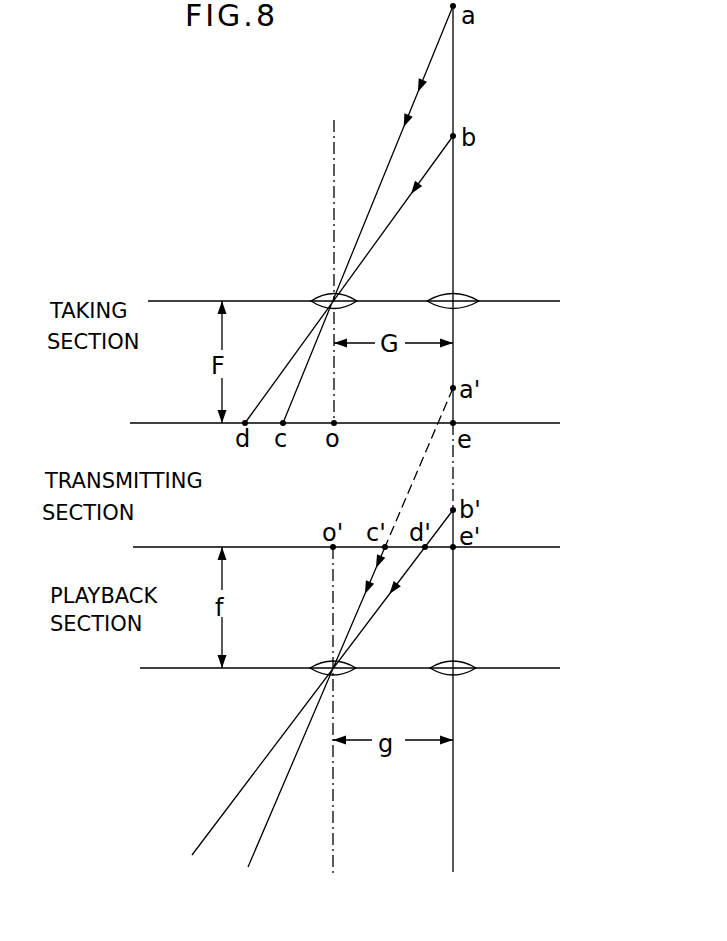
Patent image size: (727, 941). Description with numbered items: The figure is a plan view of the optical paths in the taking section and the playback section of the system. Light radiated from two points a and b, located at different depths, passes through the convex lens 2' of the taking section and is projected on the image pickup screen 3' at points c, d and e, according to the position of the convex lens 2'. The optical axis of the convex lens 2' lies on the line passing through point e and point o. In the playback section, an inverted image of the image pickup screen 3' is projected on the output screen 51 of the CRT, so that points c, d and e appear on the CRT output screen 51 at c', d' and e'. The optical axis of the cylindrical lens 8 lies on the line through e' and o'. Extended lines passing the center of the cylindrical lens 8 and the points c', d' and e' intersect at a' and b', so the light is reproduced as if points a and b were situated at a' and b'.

The convex lens 2' is at (374, 303).
The image pickup screen 3' is at (366, 425).
The CRT output screen 51 is at (560, 547).
The cylindrical lens 8 is at (560, 668).